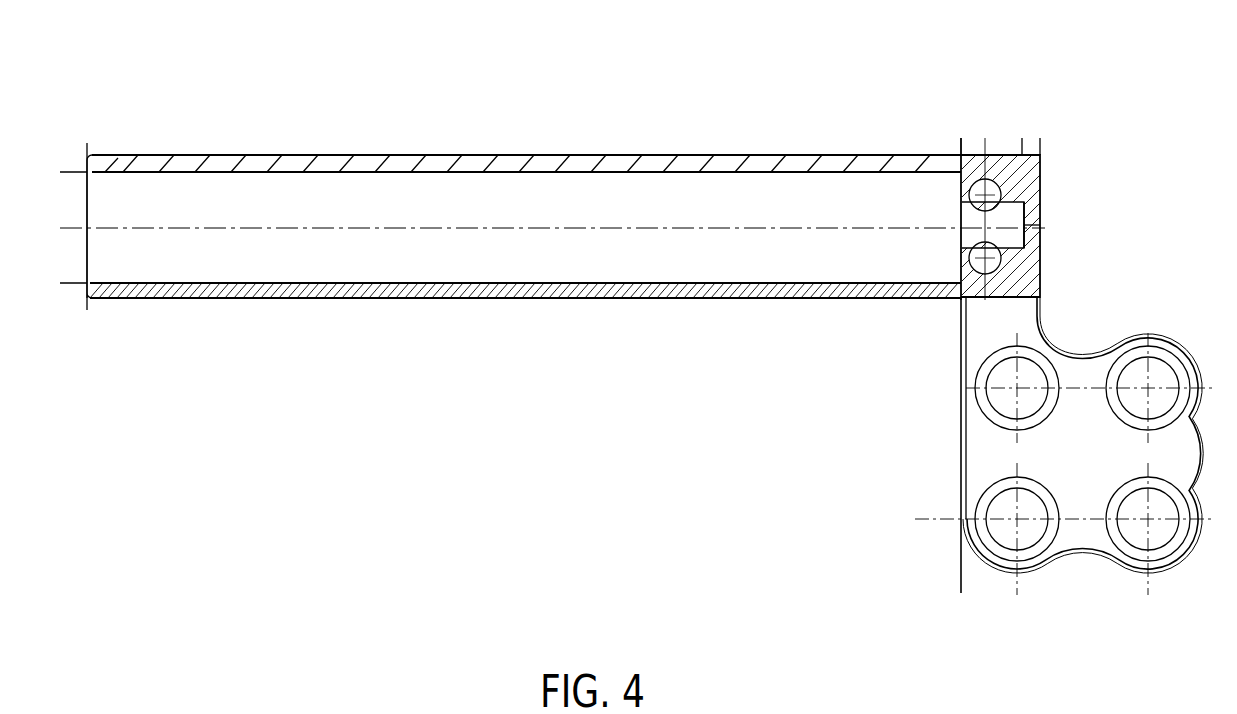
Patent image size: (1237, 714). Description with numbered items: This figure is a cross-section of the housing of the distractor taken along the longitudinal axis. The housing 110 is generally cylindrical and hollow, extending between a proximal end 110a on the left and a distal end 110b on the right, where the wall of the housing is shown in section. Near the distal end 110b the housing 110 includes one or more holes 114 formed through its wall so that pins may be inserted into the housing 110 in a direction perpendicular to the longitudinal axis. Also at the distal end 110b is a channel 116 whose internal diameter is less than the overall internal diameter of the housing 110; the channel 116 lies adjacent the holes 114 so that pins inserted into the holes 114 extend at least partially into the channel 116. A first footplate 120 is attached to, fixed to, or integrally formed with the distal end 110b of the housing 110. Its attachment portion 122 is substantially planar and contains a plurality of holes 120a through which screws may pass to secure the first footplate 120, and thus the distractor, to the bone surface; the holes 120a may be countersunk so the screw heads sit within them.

The housing 110 is at (540, 128).
The proximal end 110a is at (123, 140).
The distal end 110b is at (987, 137).
The holes 114 is at (1022, 154).
The channel 116 is at (1028, 231).
The first footplate 120 is at (1010, 580).
The holes 120a is at (1152, 570).
The attachment portion 122 is at (990, 460).